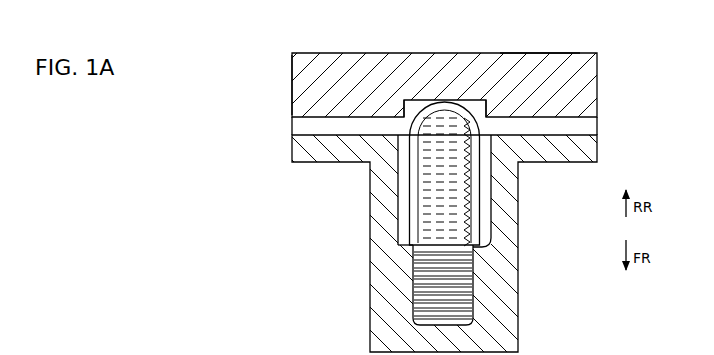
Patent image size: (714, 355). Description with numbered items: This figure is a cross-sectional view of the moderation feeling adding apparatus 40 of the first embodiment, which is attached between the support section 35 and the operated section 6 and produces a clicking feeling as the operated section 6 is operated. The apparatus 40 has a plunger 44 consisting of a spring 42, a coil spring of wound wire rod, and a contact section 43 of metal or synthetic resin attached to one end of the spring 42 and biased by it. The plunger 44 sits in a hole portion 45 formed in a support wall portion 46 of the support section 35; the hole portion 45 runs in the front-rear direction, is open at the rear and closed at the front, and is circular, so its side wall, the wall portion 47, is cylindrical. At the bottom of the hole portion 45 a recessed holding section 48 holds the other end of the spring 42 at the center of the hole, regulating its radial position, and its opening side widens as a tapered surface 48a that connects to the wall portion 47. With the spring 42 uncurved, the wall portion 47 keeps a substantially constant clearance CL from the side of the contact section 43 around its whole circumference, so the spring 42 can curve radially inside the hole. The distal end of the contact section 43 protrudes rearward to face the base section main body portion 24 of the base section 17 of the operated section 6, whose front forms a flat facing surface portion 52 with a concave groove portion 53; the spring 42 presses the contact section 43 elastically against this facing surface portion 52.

The operated section 6 is at (536, 50).
The base section 17 is at (335, 60).
The base section main body portion 24 is at (295, 80).
The support section 35 is at (297, 150).
The moderation feeling adding apparatus 40 is at (600, 75).
The spring 42 is at (474, 309).
The contact section 43 is at (441, 103).
The plunger 44 is at (414, 108).
The hole portion 45 is at (397, 243).
The support wall portion 46 is at (508, 343).
The wall portion 47 is at (384, 184).
The holding section 48 is at (413, 312).
The tapered surface 48a is at (484, 249).
The facing surface portion 52 is at (597, 118).
The concave groove portion 53 is at (485, 104).
The clearance CL is at (407, 209).